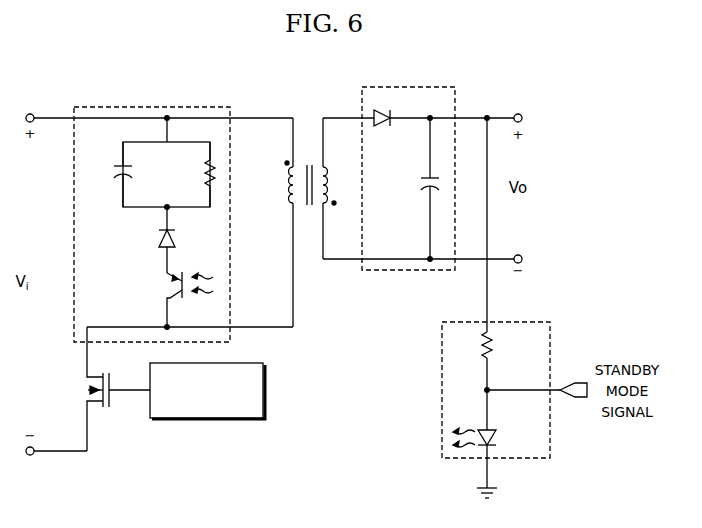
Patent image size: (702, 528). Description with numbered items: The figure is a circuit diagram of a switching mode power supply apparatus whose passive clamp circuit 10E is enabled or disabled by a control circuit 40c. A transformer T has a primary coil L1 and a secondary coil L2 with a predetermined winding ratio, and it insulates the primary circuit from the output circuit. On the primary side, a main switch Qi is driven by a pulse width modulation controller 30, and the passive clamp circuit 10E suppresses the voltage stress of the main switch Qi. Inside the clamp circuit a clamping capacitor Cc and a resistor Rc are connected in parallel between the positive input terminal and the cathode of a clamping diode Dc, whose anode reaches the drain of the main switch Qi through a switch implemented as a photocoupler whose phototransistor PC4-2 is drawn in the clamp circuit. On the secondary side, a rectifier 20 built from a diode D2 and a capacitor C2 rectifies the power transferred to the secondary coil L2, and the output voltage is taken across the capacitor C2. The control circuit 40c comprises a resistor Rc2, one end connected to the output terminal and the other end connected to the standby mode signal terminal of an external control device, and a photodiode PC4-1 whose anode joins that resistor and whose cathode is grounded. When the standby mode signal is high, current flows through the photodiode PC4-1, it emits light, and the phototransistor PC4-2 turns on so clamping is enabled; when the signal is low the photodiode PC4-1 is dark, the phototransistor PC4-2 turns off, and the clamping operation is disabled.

The passive clamp circuit 10E is at (185, 105).
The rectifier 20 is at (455, 99).
The pulse width modulation controller 30 is at (228, 363).
The control circuit 40c is at (442, 363).
The clamping capacitor Cc is at (135, 174).
The resistor Rc is at (198, 174).
The resistor Rc2 is at (501, 345).
The clamping diode Dc is at (156, 240).
The phototransistor PC4-2 is at (161, 299).
The photodiode PC4-1 is at (498, 438).
The main switch Qi is at (107, 389).
The transformer T is at (310, 222).
The primary coil L1 is at (280, 222).
The secondary coil L2 is at (337, 188).
The diode D2 is at (381, 108).
The capacitor C2 is at (417, 189).